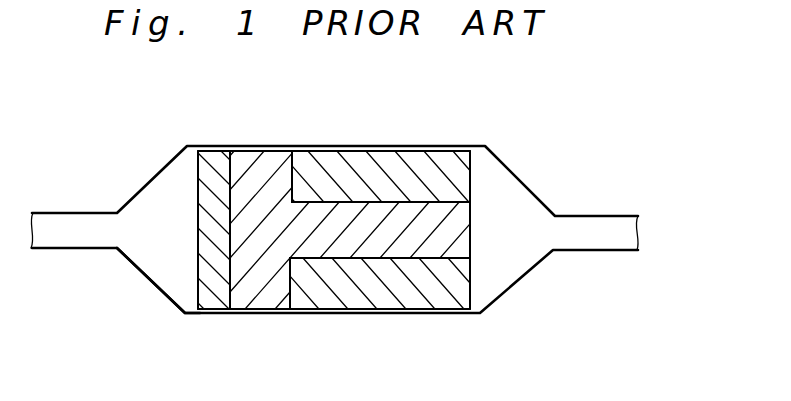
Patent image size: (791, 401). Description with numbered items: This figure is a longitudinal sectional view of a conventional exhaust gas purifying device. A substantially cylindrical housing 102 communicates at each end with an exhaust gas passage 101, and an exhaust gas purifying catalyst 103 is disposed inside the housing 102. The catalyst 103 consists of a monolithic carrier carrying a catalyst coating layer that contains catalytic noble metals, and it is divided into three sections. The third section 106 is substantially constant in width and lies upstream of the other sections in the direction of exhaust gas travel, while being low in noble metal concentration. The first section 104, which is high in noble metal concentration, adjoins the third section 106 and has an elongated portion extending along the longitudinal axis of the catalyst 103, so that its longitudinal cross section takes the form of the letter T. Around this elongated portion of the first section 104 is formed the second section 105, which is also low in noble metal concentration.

The exhaust gas passage 101 is at (84, 251).
The housing 102 is at (350, 137).
The exhaust gas purifying catalyst 103 is at (184, 274).
The first section 104 is at (267, 282).
The second section 105 is at (410, 288).
The third section 106 is at (212, 303).